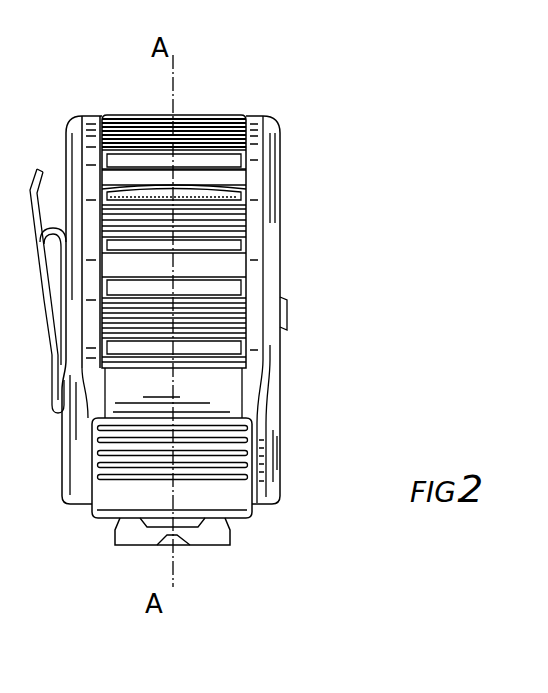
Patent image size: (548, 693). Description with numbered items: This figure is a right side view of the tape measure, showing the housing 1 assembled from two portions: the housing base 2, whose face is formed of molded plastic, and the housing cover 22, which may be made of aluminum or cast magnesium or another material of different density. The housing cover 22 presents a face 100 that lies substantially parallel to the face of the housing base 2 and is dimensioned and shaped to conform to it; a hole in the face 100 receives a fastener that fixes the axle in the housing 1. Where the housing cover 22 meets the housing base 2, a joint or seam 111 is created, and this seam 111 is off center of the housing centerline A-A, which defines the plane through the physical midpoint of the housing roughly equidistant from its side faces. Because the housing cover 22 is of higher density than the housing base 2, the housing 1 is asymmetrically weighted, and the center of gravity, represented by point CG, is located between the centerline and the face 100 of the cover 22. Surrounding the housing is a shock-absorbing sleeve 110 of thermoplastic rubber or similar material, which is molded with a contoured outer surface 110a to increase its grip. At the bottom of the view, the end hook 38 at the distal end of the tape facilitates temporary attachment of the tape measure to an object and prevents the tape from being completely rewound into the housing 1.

The housing 1 is at (221, 80).
The housing base 2 is at (93, 116).
The housing cover 22 is at (279, 437).
The end hook 38 is at (205, 538).
The face 100 is at (281, 387).
The shock-absorbing sleeve 110 is at (190, 120).
The contoured outer surface 110a is at (211, 150).
The joint or seam 111 is at (248, 175).
The center of gravity CG is at (245, 303).